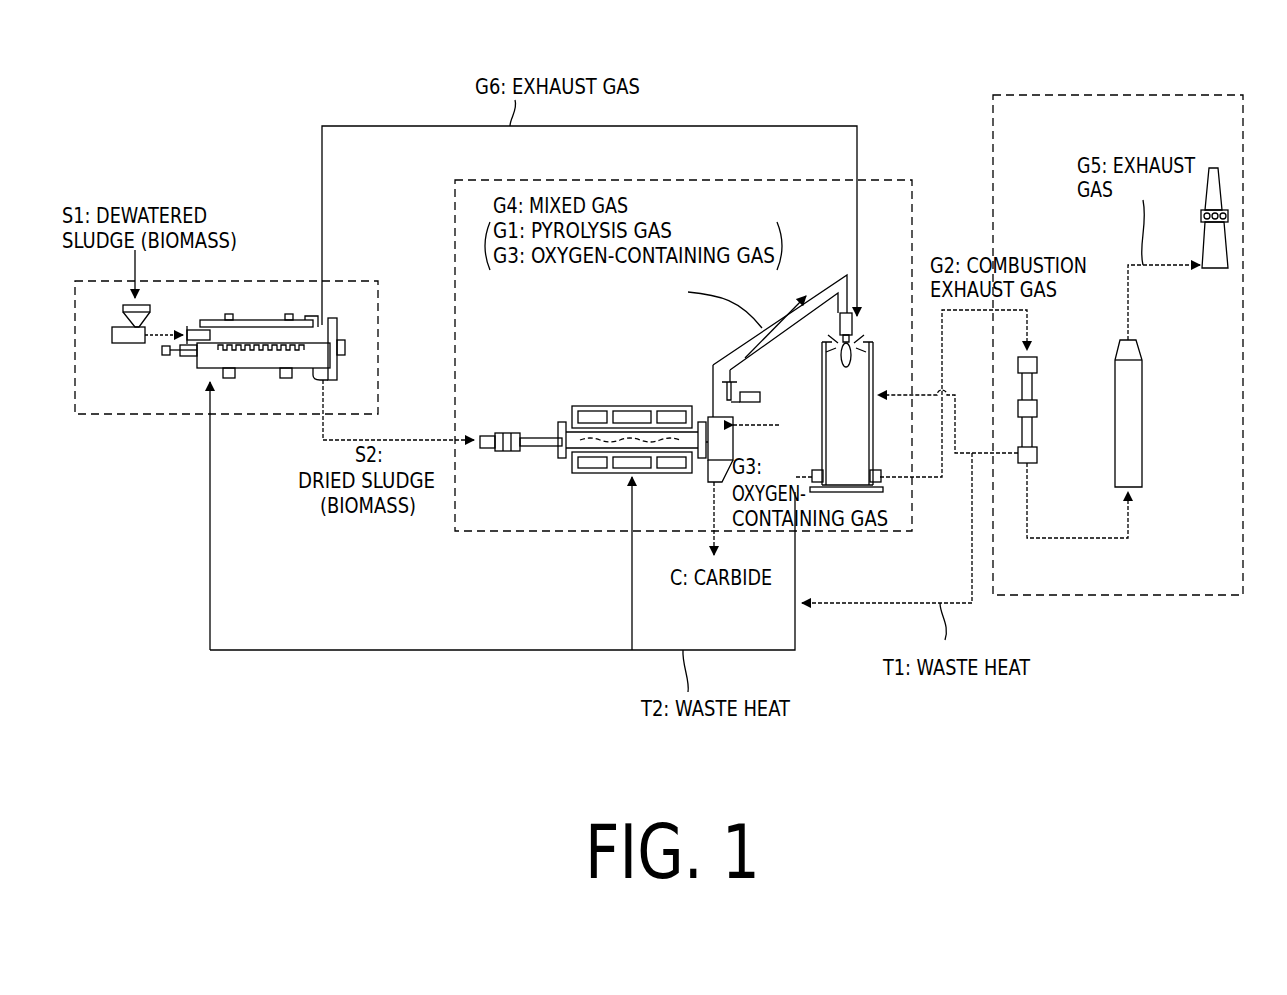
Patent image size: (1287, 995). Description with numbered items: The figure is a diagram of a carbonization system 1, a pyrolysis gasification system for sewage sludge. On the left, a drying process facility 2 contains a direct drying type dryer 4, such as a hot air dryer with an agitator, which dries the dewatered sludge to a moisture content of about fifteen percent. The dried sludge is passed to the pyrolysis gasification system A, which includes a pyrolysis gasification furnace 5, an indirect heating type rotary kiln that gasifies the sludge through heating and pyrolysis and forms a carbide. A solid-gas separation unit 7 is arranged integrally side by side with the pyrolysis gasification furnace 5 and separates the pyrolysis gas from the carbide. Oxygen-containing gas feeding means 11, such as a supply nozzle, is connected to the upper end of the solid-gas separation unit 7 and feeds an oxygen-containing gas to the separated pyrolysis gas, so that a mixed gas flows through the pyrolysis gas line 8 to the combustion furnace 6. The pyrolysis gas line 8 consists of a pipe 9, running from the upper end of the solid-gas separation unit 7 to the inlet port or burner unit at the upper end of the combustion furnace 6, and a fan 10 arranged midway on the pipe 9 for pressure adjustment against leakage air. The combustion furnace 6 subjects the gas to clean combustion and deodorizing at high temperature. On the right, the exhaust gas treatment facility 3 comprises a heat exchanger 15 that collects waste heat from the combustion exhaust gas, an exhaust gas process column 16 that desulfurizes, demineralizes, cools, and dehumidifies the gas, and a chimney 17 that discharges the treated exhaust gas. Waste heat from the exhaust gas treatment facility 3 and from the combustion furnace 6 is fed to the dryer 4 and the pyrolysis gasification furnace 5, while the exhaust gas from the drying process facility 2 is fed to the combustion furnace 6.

The carbonization system 1 is at (907, 120).
The pyrolysis gasification system A is at (743, 176).
The drying process facility 2 is at (293, 276).
The exhaust gas treatment facility 3 is at (1209, 88).
The dryer 4 is at (245, 320).
The pyrolysis gasification furnace 5 is at (632, 405).
The combustion furnace 6 is at (873, 360).
The solid-gas separation unit 7 is at (702, 484).
The pyrolysis gas line 8 is at (836, 275).
The pipe 9 is at (823, 278).
The fan 10 is at (752, 392).
The oxygen-containing gas feeding means 11 is at (712, 416).
The heat exchanger 15 is at (1035, 400).
The exhaust gas process column 16 is at (1142, 395).
The chimney 17 is at (1222, 186).